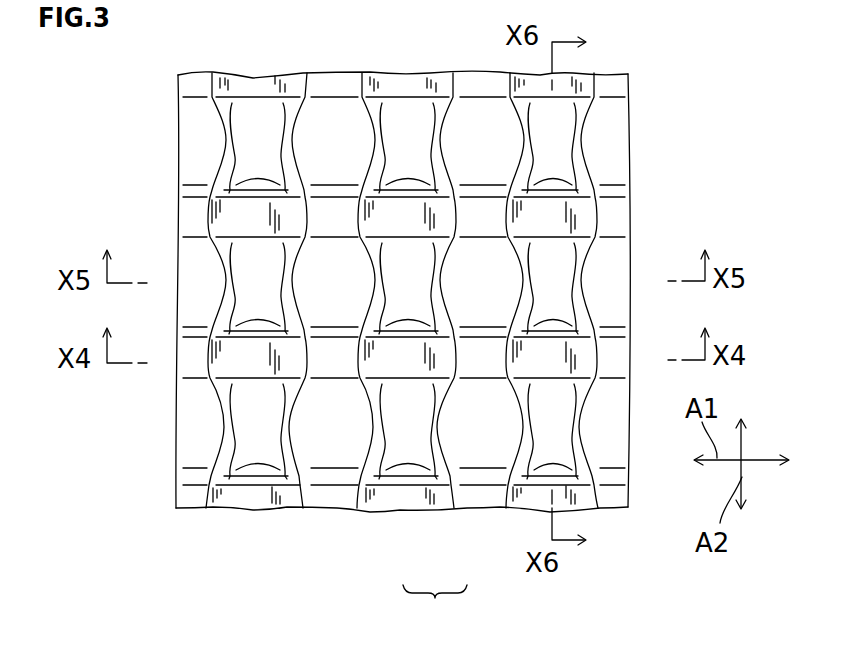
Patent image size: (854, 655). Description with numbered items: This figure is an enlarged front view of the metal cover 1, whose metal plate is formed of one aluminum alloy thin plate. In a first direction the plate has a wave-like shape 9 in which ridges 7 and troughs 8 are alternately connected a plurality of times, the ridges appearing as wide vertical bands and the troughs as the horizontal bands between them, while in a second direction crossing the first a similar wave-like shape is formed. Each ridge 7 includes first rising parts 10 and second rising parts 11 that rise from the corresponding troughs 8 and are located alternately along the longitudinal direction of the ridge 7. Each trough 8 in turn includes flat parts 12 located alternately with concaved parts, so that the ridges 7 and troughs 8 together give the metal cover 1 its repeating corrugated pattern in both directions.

The metal cover 1 is at (150, 96).
The ridge 7 is at (392, 522).
The trough 8 is at (475, 520).
The wave-like shape 9 is at (435, 606).
The first rising part 10 is at (547, 215).
The second rising part 11 is at (552, 291).
The flat part 12 is at (338, 278).